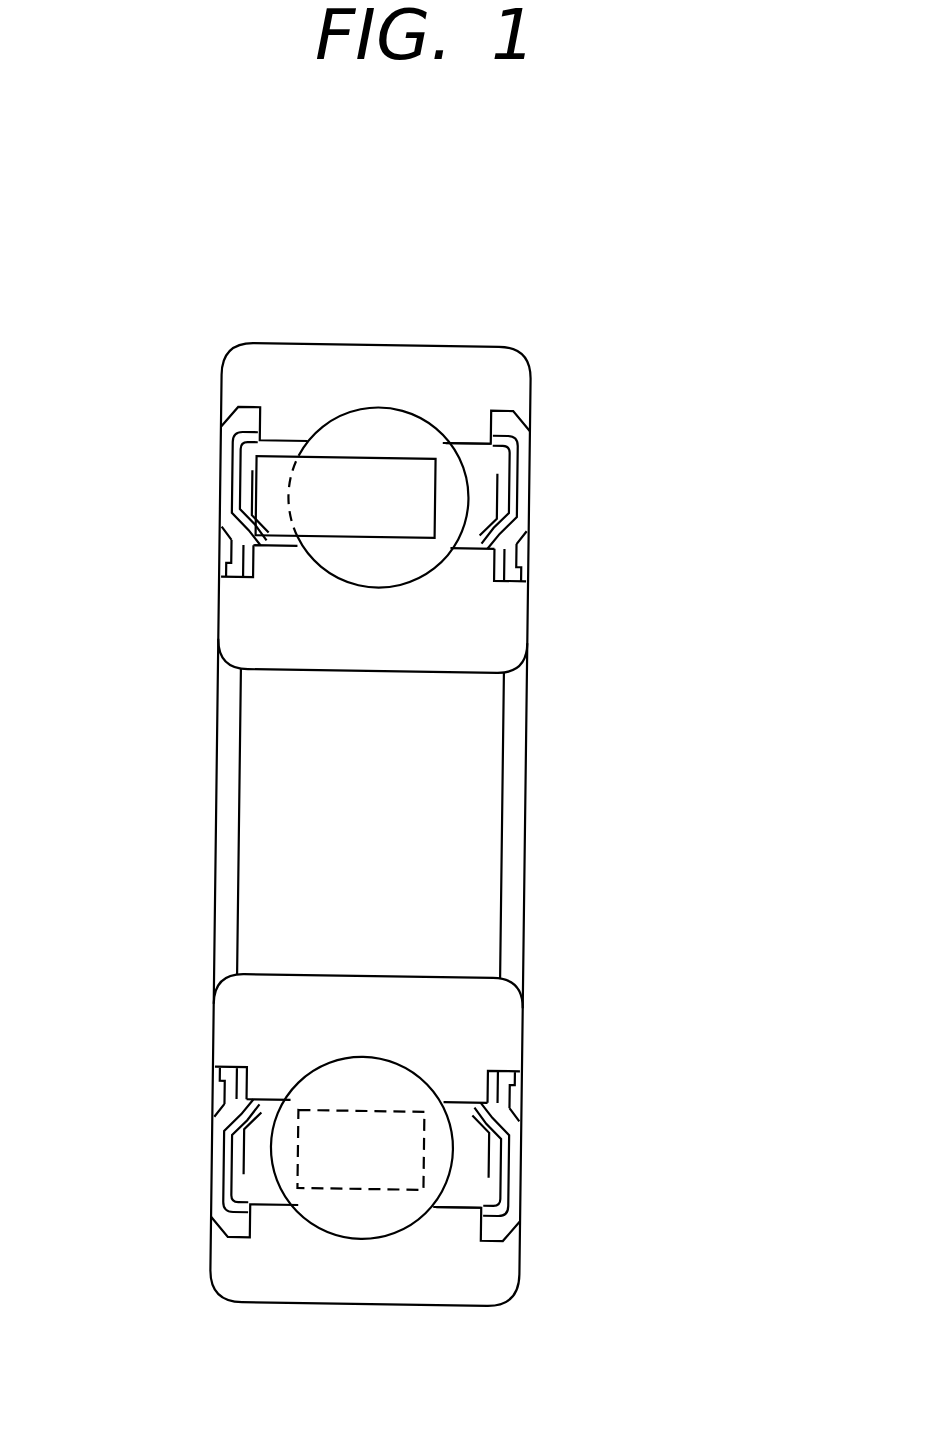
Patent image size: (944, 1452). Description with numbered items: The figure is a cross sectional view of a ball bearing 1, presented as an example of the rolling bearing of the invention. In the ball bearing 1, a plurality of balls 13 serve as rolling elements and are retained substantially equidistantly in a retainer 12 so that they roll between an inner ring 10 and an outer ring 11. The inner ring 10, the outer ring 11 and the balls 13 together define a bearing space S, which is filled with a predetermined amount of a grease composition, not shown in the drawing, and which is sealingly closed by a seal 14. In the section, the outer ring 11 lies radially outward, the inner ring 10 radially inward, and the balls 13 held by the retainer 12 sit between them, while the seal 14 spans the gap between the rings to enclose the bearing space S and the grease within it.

The ball bearing 1 is at (700, 463).
The inner ring 10 is at (267, 617).
The outer ring 11 is at (273, 388).
The retainer 12 is at (320, 515).
The balls 13 is at (447, 487).
The seal 14 is at (222, 468).
The bearing space S is at (482, 512).